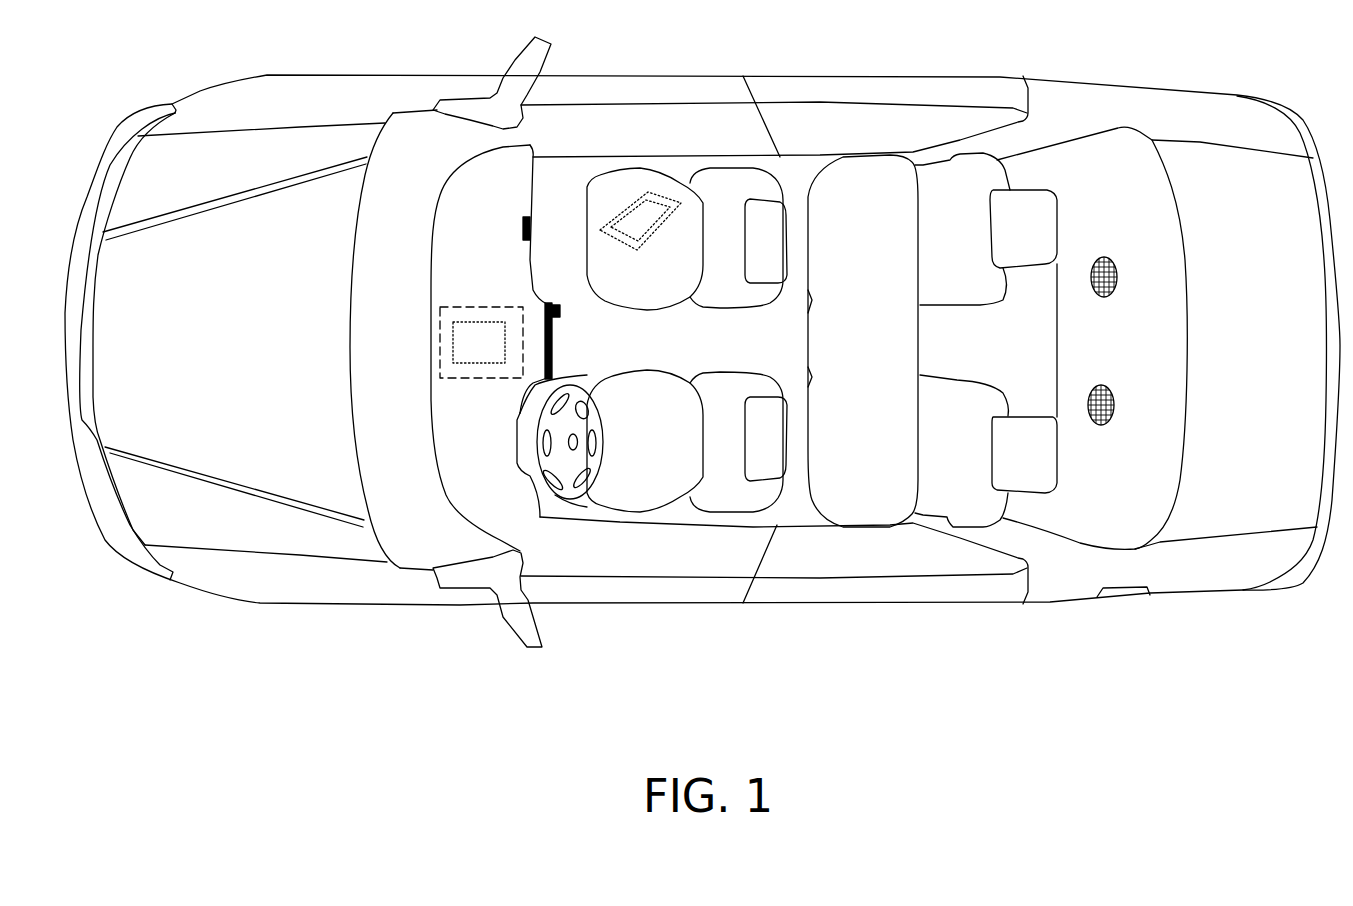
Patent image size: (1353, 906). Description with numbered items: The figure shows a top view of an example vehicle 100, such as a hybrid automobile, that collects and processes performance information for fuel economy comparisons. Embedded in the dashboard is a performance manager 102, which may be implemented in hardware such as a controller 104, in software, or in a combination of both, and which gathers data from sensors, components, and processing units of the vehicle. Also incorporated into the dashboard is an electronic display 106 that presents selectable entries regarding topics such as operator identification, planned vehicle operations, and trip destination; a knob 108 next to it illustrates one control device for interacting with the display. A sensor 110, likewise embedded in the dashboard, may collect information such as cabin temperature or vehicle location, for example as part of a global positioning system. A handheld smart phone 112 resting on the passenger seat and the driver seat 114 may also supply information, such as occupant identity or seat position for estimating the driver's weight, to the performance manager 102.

The vehicle 100 is at (1093, 80).
The performance manager 102 is at (497, 353).
The controller 104 is at (473, 304).
The electronic display 106 is at (553, 343).
The knob 108 is at (558, 303).
The sensor 110 is at (523, 232).
The smart phone 112 is at (648, 236).
The driver seat 114 is at (703, 372).